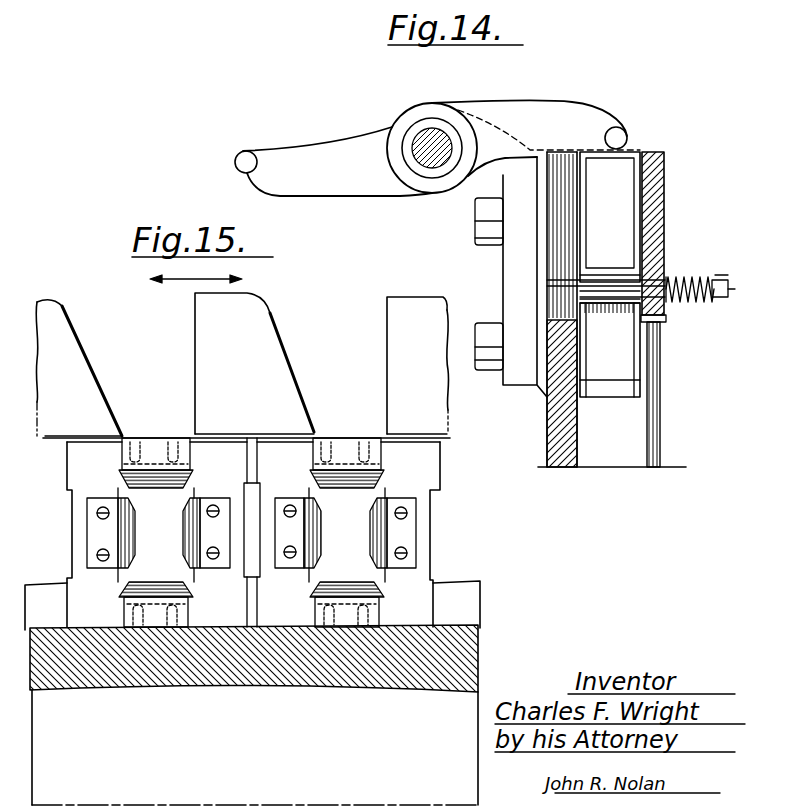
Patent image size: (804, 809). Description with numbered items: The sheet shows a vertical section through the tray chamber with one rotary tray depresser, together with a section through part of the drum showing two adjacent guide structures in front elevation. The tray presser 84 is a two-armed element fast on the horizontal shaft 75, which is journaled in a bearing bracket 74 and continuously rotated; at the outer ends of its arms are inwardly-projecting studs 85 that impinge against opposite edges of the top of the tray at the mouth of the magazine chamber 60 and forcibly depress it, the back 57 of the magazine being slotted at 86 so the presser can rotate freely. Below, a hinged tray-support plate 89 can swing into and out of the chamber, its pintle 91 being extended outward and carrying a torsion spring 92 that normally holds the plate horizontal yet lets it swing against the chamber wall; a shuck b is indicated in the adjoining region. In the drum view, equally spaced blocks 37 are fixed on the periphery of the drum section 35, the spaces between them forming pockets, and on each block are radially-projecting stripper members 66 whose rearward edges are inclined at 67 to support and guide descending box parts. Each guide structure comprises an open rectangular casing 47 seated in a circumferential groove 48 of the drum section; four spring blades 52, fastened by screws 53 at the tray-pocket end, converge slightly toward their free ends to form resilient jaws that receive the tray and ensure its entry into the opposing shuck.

In FIG. 14, the rotary presser 84 is at (528, 113).
In FIG. 14, the inwardly-projecting stud 85 is at (239, 151).
In FIG. 14, the horizontal shaft 75 is at (418, 163).
In FIG. 14, the bearing bracket 74 is at (520, 255).
In FIG. 14, the slot 86 is at (562, 268).
In FIG. 14, the back 57 is at (548, 443).
In FIG. 14, the shuck b is at (650, 182).
In FIG. 14, the plate 89 is at (665, 238).
In FIG. 14, the magazine chamber 60 is at (643, 435).
In FIG. 14, the torsion spring 92 is at (703, 272).
In FIG. 14, the pintle 91 is at (729, 279).
In FIG. 15, the stripper member 66 is at (78, 357).
In FIG. 15, the inclined rearward edge 67 is at (102, 387).
In FIG. 15, the block 37 is at (65, 432).
In FIG. 15, the spring blade 52 is at (143, 472).
In FIG. 15, the screw 53 is at (97, 556).
In FIG. 15, the circumferential groove 48 is at (42, 602).
In FIG. 15, the casing 47 is at (227, 607).
In FIG. 15, the drum section 35 is at (33, 760).